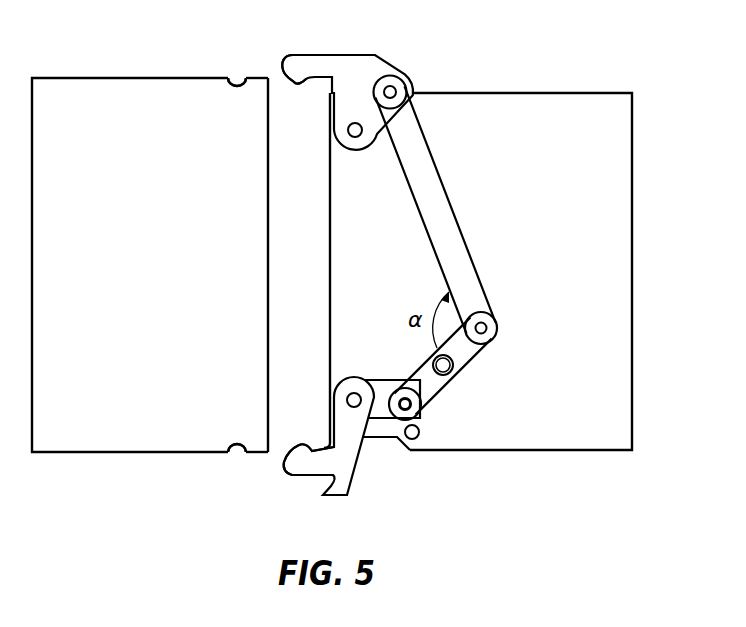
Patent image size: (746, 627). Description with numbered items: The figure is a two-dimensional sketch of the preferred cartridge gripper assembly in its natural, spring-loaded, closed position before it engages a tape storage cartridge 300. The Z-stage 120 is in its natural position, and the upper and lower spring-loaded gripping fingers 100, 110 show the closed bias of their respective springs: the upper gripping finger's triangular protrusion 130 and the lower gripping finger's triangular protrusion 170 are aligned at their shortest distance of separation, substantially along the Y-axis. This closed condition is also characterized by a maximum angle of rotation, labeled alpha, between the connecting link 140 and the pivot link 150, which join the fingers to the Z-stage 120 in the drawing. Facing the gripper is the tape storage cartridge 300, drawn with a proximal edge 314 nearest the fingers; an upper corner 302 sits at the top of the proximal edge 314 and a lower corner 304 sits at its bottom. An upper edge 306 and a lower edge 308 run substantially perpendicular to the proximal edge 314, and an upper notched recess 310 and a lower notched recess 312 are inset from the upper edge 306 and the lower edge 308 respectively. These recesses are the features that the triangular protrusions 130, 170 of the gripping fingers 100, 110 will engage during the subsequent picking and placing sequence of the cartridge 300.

The upper gripping finger 100 is at (348, 68).
The lower gripping finger 110 is at (342, 460).
The Z-stage 120 is at (582, 252).
The triangular protrusion 130 is at (300, 85).
The connecting link 140 is at (442, 208).
The pivot link 150 is at (463, 347).
The triangular protrusion 170 is at (290, 446).
The tape storage cartridge 300 is at (110, 284).
The upper corner 302 is at (268, 76).
The lower corner 304 is at (262, 458).
The upper edge 306 is at (247, 77).
The lower edge 308 is at (233, 458).
The upper notched recess 310 is at (238, 84).
The lower notched recess 312 is at (235, 449).
The proximal edge 314 is at (270, 263).